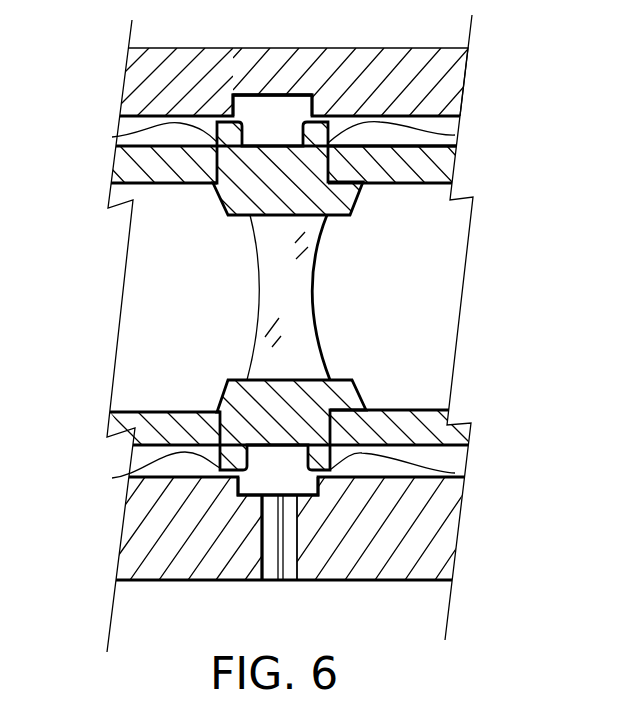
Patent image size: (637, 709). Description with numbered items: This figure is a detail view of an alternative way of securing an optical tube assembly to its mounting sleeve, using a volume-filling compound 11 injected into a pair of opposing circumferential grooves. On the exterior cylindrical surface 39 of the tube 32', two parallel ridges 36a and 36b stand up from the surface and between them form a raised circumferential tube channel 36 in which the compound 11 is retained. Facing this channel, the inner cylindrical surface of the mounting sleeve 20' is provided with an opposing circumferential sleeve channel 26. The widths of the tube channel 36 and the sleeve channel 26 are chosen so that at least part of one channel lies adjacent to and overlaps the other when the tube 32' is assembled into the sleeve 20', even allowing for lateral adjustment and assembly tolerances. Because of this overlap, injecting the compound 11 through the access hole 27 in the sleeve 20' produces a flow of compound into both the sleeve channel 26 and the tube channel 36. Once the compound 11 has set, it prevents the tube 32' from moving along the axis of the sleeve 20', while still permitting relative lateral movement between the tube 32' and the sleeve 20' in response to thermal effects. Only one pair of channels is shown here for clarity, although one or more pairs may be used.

The compound 11 is at (263, 93).
The sleeve channel 26 is at (297, 87).
The mounting sleeve 20' is at (328, 314).
The ridge 36a is at (112, 137).
The ridge 36b is at (455, 135).
The tube channel 36 is at (250, 148).
The tube 32' is at (315, 295).
The exterior cylindrical surface 39 is at (398, 142).
The access hole 27 is at (262, 558).